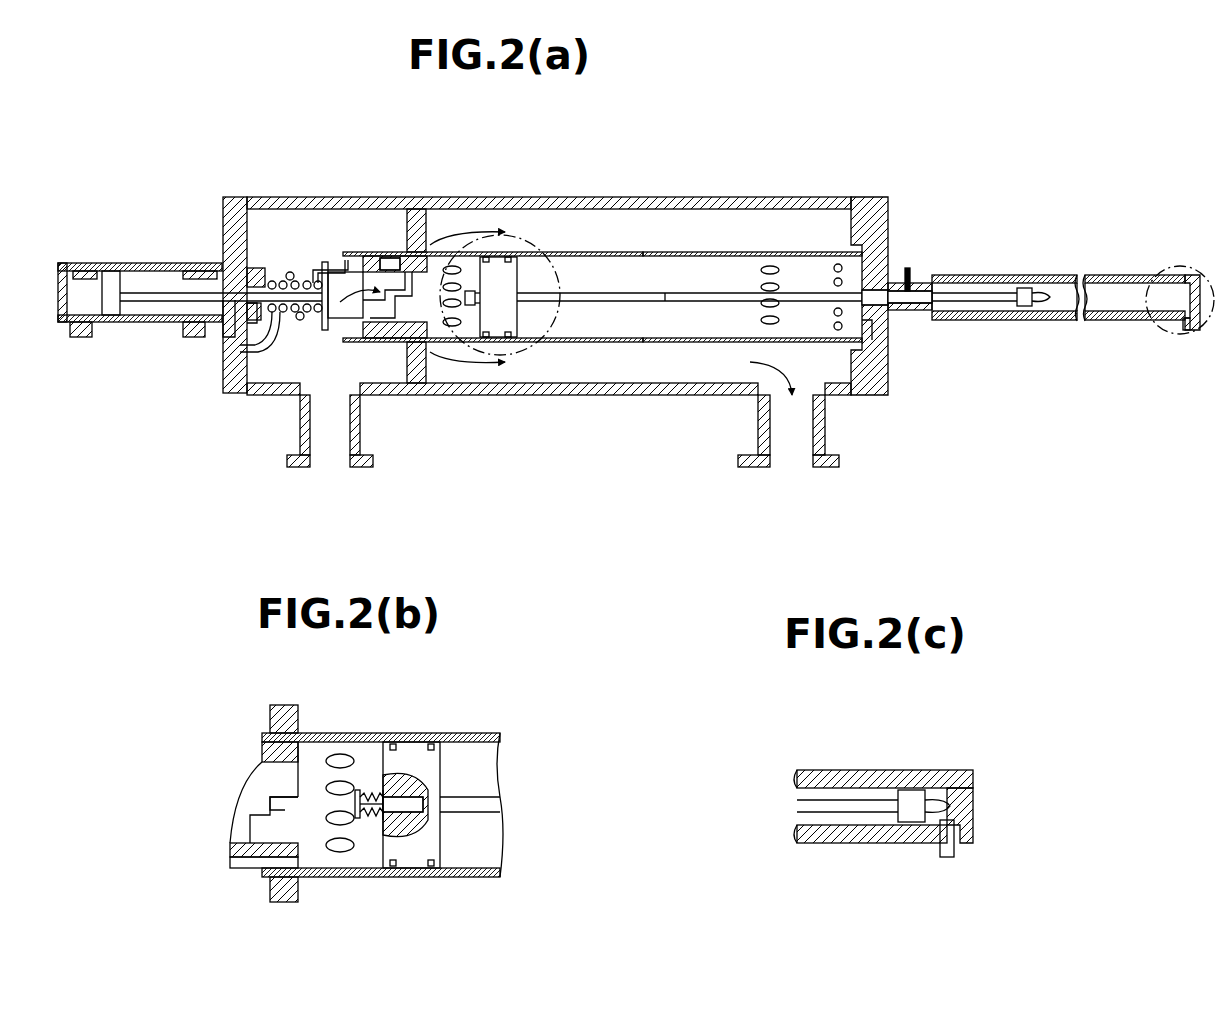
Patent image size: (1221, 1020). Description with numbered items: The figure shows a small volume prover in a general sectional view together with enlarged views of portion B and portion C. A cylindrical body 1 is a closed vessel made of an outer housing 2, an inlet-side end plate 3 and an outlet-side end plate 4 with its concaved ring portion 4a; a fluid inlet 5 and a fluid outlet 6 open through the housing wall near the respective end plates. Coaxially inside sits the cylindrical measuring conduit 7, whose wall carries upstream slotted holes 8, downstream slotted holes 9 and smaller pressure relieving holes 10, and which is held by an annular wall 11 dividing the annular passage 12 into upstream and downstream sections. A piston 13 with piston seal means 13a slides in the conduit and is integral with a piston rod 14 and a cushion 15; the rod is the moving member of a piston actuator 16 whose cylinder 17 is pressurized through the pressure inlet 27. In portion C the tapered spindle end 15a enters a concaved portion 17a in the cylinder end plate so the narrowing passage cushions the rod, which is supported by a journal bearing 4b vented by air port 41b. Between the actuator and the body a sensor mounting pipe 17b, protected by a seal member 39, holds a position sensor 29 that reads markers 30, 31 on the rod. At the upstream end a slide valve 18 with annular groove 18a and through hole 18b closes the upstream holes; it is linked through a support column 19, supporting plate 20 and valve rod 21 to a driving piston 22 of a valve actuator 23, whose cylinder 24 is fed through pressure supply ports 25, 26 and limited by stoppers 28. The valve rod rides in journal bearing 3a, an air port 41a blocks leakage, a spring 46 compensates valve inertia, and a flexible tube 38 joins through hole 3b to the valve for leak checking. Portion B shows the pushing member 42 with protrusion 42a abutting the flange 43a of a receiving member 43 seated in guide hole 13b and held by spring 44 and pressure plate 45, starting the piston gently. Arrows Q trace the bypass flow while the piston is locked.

In FIG. 2A, the cylindrical body 1 is at (697, 172).
In FIG. 2A, the outer housing 2 is at (622, 207).
In FIG. 2A, the inlet-side end plate 3 is at (225, 215).
In FIG. 2A, the journal bearing 3a is at (262, 272).
In FIG. 2A, the through hole 3b is at (228, 345).
In FIG. 2A, the outlet-side end plate 4 is at (880, 230).
In FIG. 2A, the concaved ring portion 4a is at (833, 270).
In FIG. 2A, the journal bearing 4b is at (833, 314).
In FIG. 2A, the inlet 5 is at (333, 470).
In FIG. 2A, the outlet 6 is at (790, 470).
In FIG. 2A, the cylindrical measuring conduit 7 is at (540, 252).
In FIG. 2B, the cylindrical measuring conduit 7 is at (413, 733).
In FIG. 2A, the upstream slotted holes 8 is at (448, 262).
In FIG. 2B, the upstream slotted holes 8 is at (345, 733).
In FIG. 2A, the downstream slotted holes 9 is at (775, 252).
In FIG. 2A, the pressure relieving holes 10 is at (855, 365).
In FIG. 2A, the annular wall 11 is at (416, 225).
In FIG. 2A, the annular passage 12 is at (583, 230).
In FIG. 2A, the piston 13 is at (512, 320).
In FIG. 2B, the piston 13 is at (432, 768).
In FIG. 2A, the piston seal means 13a is at (487, 337).
In FIG. 2B, the piston seal means 13a is at (430, 868).
In FIG. 2B, the guide hole 13b is at (428, 815).
In FIG. 2A, the piston rod 14 is at (590, 302).
In FIG. 2B, the piston rod 14 is at (470, 803).
In FIG. 2C, the piston rod 14 is at (812, 806).
In FIG. 2A, the cushion 15 is at (1025, 306).
In FIG. 2C, the cushion 15 is at (912, 800).
In FIG. 2C, the tapered spindle end 15a is at (940, 806).
In FIG. 2A, the piston actuator 16 is at (1100, 324).
In FIG. 2A, the cylinder 17 is at (1115, 276).
In FIG. 2C, the concaved portion 17a is at (968, 790).
In FIG. 2A, the sensor mounting pipe 17b is at (905, 283).
In FIG. 2A, the slide valve 18 is at (370, 256).
In FIG. 2B, the slide valve 18 is at (230, 849).
In FIG. 2A, the annular groove 18a is at (388, 256).
In FIG. 2B, the annular groove 18a is at (230, 864).
In FIG. 2A, the through hole 18b is at (402, 256).
In FIG. 2A, the support column 19 is at (325, 262).
In FIG. 2A, the supporting plate 20 is at (340, 275).
In FIG. 2A, the valve rod 21 is at (150, 292).
In FIG. 2A, the driving piston 22 is at (112, 280).
In FIG. 2A, the valve actuator 23 is at (92, 228).
In FIG. 2A, the cylinder 24 is at (155, 323).
In FIG. 2A, the pressure supply port 25 is at (80, 338).
In FIG. 2A, the pressure supply port 26 is at (194, 337).
In FIG. 2A, the pressure inlet 27 is at (1188, 331).
In FIG. 2C, the pressure inlet 27 is at (947, 857).
In FIG. 2A, the stopper 28 is at (80, 270).
In FIG. 2A, the position sensor 29 is at (910, 272).
In FIG. 2A, the marker 30 is at (672, 392).
In FIG. 2A, the marker 31 is at (895, 312).
In FIG. 2A, the flexible tube 38 is at (264, 352).
In FIG. 2A, the seal member 39 is at (948, 280).
In FIG. 2A, the air port 41a is at (228, 330).
In FIG. 2A, the air port 41b is at (878, 338).
In FIG. 2B, the pushing member 42 is at (270, 816).
In FIG. 2B, the protrusion 42a is at (290, 800).
In FIG. 2B, the receiving member 43 is at (378, 815).
In FIG. 2B, the flange 43a is at (383, 790).
In FIG. 2B, the spring 44 is at (368, 818).
In FIG. 2B, the pressure plate 45 is at (360, 792).
In FIG. 2A, the spring 46 is at (300, 318).
In FIG. 2A, the portion B is at (561, 272).
In FIG. 2A, the portion C is at (1178, 267).
In FIG. 2A, the arrows Q is at (333, 300).